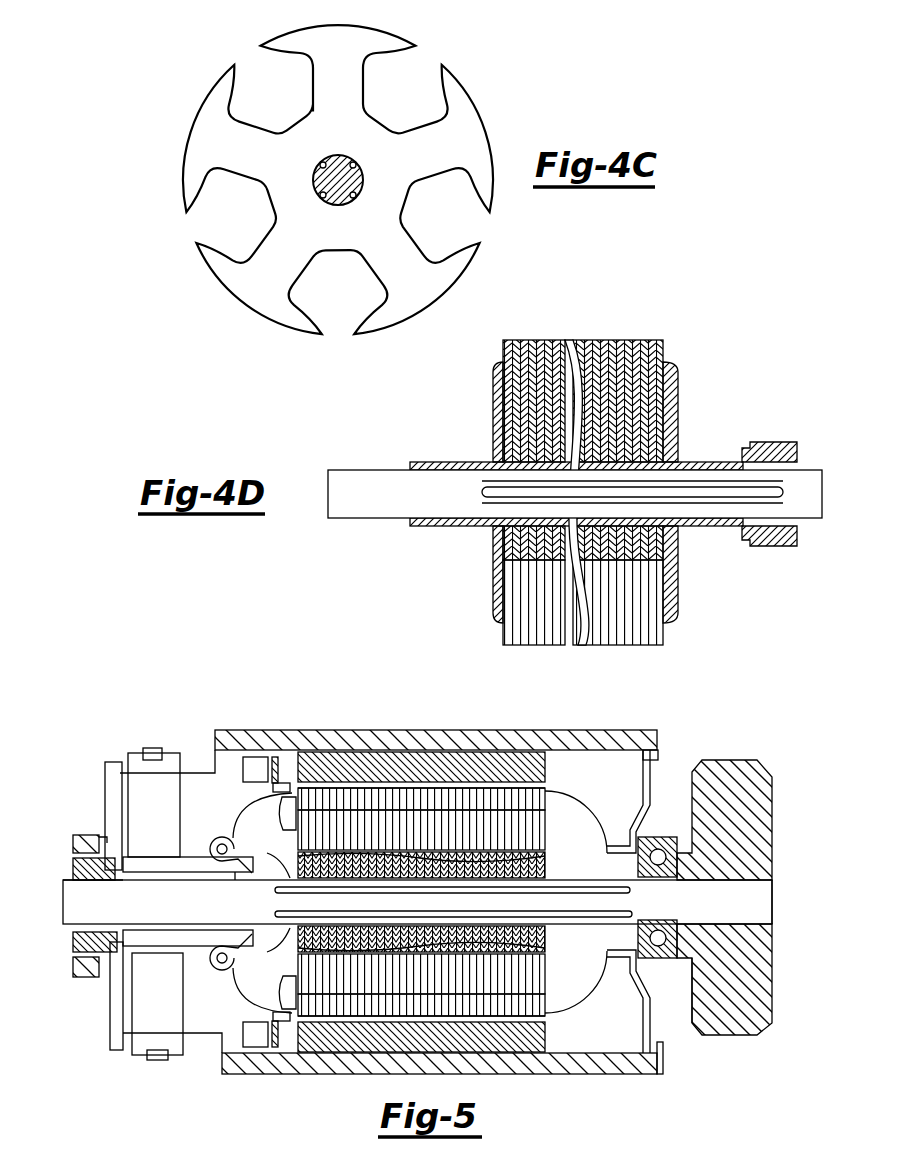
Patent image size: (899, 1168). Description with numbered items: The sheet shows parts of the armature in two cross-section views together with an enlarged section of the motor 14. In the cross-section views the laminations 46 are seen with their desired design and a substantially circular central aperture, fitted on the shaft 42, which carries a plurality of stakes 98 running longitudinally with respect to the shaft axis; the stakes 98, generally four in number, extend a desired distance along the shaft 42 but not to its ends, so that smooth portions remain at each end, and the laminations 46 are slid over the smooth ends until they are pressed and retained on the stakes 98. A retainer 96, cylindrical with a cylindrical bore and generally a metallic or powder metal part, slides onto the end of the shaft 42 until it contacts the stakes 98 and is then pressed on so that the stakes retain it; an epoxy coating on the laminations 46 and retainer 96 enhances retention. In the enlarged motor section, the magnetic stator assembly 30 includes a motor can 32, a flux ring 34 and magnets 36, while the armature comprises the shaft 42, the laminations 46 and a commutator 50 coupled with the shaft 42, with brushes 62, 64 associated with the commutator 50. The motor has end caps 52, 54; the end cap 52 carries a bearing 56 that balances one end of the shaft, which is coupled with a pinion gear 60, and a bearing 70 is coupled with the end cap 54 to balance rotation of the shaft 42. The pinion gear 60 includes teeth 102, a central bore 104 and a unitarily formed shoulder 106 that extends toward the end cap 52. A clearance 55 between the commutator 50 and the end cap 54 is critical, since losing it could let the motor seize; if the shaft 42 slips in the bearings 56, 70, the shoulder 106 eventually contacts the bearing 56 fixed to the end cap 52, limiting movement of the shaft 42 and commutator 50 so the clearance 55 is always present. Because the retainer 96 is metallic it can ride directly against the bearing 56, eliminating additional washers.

In FIG. 5, the motor 14 is at (436, 869).
In FIG. 5, the magnetic stator assembly 30 is at (352, 745).
In FIG. 5, the motor can 32 is at (402, 752).
In FIG. 5, the flux ring 34 is at (424, 770).
In FIG. 5, the magnet 36 is at (445, 765).
In FIG. 4C, the shaft 42 is at (337, 157).
In FIG. 4D, the shaft 42 is at (468, 472).
In FIG. 5, the shaft 42 is at (195, 910).
In FIG. 4C, the laminations 46 is at (473, 110).
In FIG. 4D, the laminations 46 is at (607, 340).
In FIG. 5, the laminations 46 is at (496, 790).
In FIG. 5, the commutator 50 is at (167, 853).
In FIG. 5, the end cap 52 is at (655, 780).
In FIG. 5, the end cap 54 is at (73, 842).
In FIG. 5, the clearance 55 is at (110, 988).
In FIG. 5, the bearing 56 is at (632, 845).
In FIG. 5, the pinion gear 60 is at (759, 858).
In FIG. 5, the brush 62 is at (152, 748).
In FIG. 5, the brush 64 is at (157, 1062).
In FIG. 5, the bearing 70 is at (73, 868).
In FIG. 4D, the retainer 96 is at (773, 442).
In FIG. 4C, the stakes 98 is at (362, 196).
In FIG. 4D, the stakes 98 is at (720, 490).
In FIG. 5, the stakes 98 is at (277, 906).
In FIG. 5, the teeth 102 is at (758, 760).
In FIG. 5, the central bore 104 is at (768, 888).
In FIG. 5, the shoulder 106 is at (688, 945).